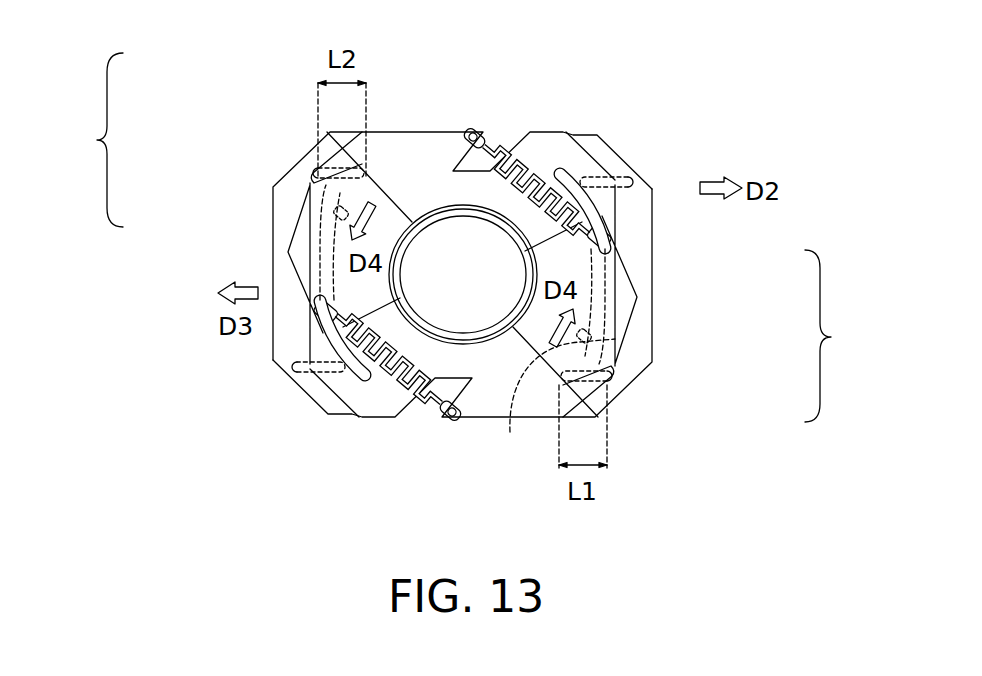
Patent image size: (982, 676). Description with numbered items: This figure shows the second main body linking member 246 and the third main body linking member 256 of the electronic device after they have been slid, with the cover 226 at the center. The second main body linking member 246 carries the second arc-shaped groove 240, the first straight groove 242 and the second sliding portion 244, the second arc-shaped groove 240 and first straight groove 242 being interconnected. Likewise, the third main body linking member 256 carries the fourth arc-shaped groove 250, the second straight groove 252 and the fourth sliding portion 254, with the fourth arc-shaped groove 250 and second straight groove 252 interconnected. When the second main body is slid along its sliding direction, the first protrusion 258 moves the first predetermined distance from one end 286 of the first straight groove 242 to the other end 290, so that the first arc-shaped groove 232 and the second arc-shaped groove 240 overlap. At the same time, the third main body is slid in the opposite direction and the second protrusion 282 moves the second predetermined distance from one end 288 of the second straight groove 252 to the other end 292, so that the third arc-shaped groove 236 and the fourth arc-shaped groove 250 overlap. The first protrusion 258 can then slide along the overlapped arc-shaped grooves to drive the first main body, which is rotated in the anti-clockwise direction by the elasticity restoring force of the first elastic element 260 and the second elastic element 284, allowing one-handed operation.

The cover 226 is at (443, 210).
The first arc-shaped groove 232 is at (575, 174).
The third arc-shaped groove 236 is at (361, 381).
The second arc-shaped groove 240 is at (606, 286).
The first straight groove 242 is at (603, 345).
The second sliding portion 244 is at (631, 190).
The second main body linking member 246 is at (845, 336).
The fourth arc-shaped groove 250 is at (345, 188).
The second straight groove 252 is at (320, 192).
The fourth sliding portion 254 is at (294, 378).
The third main body linking member 256 is at (82, 140).
The first protrusion 258 is at (510, 432).
The first elastic element 260 is at (494, 151).
The second protrusion 282 is at (340, 222).
The second elastic element 284 is at (428, 398).
The one end of the first straight groove 286 is at (600, 360).
The one end of the second straight groove 288 is at (306, 172).
The other end of the first straight groove 290 is at (574, 389).
The other end of the second straight groove 292 is at (352, 168).